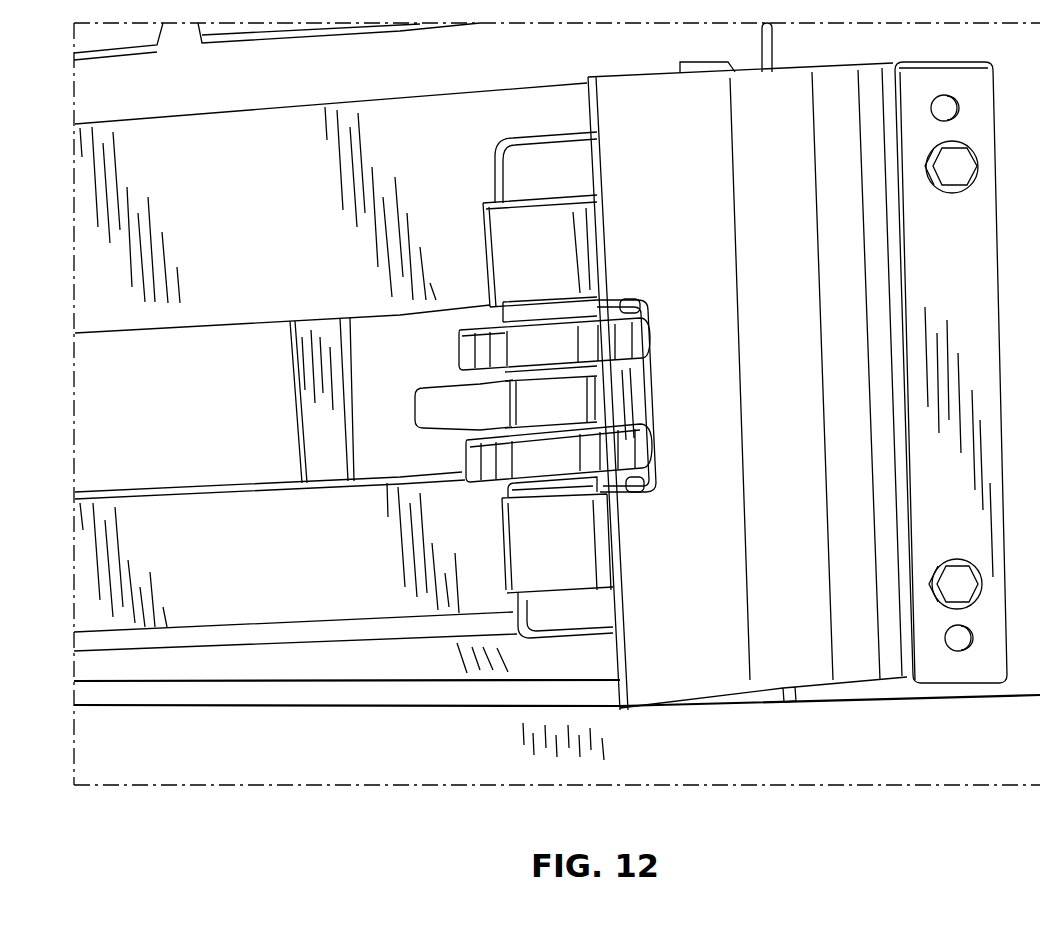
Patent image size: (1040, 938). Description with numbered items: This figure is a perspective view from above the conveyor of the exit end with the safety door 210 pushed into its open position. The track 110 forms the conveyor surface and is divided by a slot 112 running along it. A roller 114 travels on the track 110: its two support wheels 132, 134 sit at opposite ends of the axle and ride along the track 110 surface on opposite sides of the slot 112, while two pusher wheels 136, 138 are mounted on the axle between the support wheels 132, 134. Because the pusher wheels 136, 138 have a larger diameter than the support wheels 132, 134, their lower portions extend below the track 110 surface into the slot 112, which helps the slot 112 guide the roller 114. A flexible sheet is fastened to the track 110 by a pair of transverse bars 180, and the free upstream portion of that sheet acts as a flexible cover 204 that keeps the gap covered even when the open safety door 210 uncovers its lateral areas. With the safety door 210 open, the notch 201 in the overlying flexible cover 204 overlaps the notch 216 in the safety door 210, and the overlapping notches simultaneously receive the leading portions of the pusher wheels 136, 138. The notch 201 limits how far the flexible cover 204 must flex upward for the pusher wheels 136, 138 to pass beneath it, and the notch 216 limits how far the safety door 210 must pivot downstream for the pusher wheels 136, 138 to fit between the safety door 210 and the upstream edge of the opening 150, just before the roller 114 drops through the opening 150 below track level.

The track 110 is at (263, 226).
The slot 112 is at (168, 424).
The roller 114 is at (477, 285).
The support wheel 132 is at (518, 262).
The support wheel 134 is at (526, 562).
The pusher wheel 136 is at (518, 364).
The pusher wheel 138 is at (518, 476).
The opening 150 is at (527, 170).
The transverse bar 180 is at (928, 272).
The notch 201 is at (588, 398).
The flexible cover 204 is at (746, 202).
The safety door 210 is at (636, 300).
The notch 216 is at (590, 380).